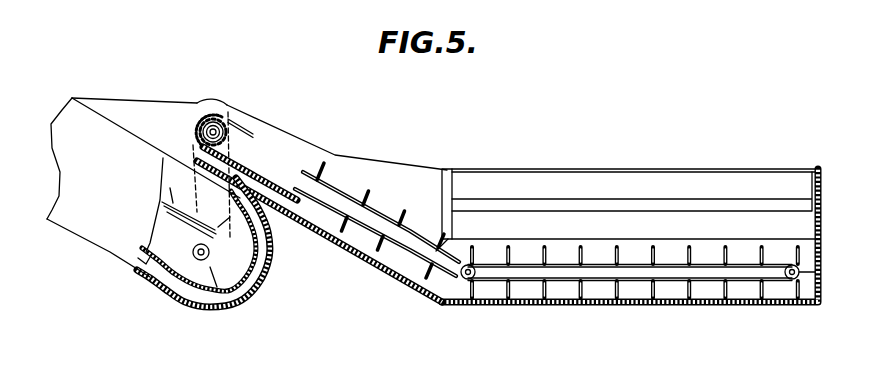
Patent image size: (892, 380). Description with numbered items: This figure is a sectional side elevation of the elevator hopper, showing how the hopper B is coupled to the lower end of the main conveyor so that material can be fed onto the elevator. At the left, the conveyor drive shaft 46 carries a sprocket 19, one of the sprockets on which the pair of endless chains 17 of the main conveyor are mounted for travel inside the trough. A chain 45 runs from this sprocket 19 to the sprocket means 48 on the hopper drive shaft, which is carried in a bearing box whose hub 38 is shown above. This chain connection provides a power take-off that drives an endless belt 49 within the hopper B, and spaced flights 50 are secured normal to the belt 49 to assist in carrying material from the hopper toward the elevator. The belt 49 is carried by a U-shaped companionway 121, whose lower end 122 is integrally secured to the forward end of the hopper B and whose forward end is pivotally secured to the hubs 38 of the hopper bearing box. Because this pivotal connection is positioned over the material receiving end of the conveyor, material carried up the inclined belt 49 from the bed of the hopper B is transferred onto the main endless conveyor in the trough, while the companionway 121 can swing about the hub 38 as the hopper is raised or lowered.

The chain 45 is at (195, 185).
The sprocket means 48 is at (205, 110).
The hub 38 is at (216, 128).
The spaced flights 50 is at (325, 172).
The endless belt 49 is at (382, 180).
The U-shaped companionway 121 is at (431, 163).
The lower end of companionway 122 is at (464, 170).
The hopper B is at (627, 164).
The conveyor drive shaft 46 is at (209, 252).
The endless chains 17 is at (160, 262).
The sprocket 19 is at (203, 268).